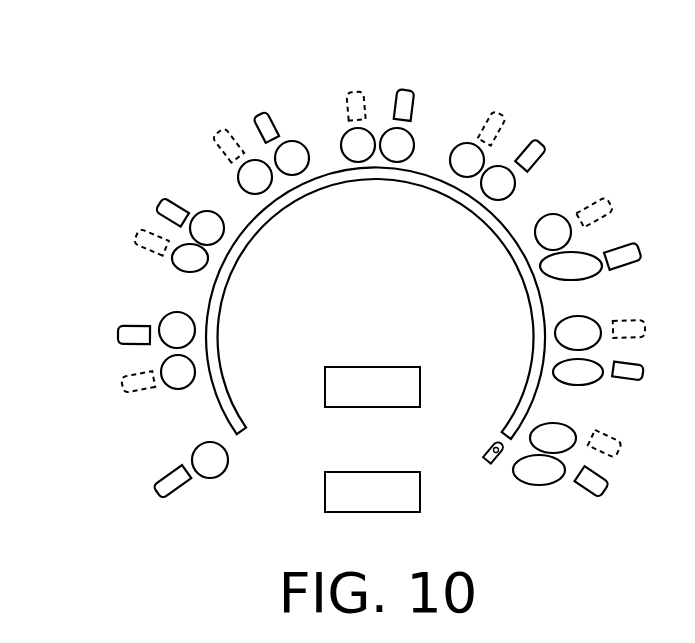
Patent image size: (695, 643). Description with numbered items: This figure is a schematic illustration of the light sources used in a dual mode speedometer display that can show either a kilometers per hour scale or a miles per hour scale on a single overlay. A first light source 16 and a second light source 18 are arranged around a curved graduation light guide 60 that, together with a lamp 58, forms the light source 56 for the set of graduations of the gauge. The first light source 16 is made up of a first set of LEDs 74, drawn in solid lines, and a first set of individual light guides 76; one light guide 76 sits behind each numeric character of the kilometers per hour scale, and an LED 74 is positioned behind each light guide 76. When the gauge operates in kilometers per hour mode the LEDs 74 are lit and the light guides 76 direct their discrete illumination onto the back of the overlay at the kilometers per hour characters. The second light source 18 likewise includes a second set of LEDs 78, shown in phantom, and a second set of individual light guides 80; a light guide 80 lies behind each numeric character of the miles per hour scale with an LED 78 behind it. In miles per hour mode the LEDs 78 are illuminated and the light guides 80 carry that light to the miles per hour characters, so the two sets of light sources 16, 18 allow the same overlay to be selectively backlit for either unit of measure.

The first light source 16 is at (339, 87).
The second light source 18 is at (439, 85).
The light source for the set of graduations 56 is at (243, 397).
The lamp 58 is at (488, 445).
The graduation light guide 60 is at (527, 386).
The first set of LEDs 74 is at (406, 90).
The first set of individual light guides 76 is at (405, 143).
The second set of LEDs 78 is at (361, 91).
The second set of individual light guides 80 is at (352, 138).